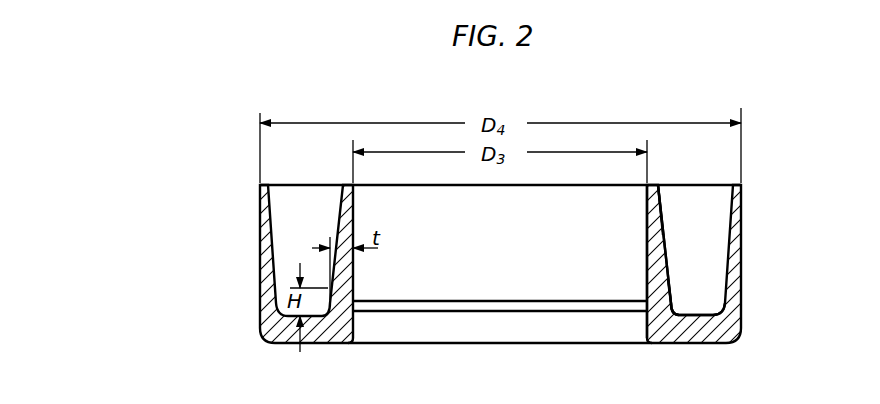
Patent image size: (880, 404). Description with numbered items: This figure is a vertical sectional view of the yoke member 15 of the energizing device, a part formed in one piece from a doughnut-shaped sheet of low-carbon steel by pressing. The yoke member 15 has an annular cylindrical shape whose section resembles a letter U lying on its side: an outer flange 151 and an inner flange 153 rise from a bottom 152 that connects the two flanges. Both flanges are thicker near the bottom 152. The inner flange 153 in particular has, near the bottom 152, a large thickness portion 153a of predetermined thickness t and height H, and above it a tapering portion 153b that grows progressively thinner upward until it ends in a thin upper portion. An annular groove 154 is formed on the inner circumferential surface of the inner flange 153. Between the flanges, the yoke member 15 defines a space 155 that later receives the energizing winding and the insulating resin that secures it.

The yoke member 15 is at (253, 201).
The outer flange 151 is at (742, 233).
The bottom 152 is at (697, 333).
The inner flange 153 is at (650, 244).
The large thickness portion 153a is at (660, 292).
The tapering portion 153b is at (655, 236).
The annular groove 154 is at (603, 309).
The space 155 is at (688, 205).